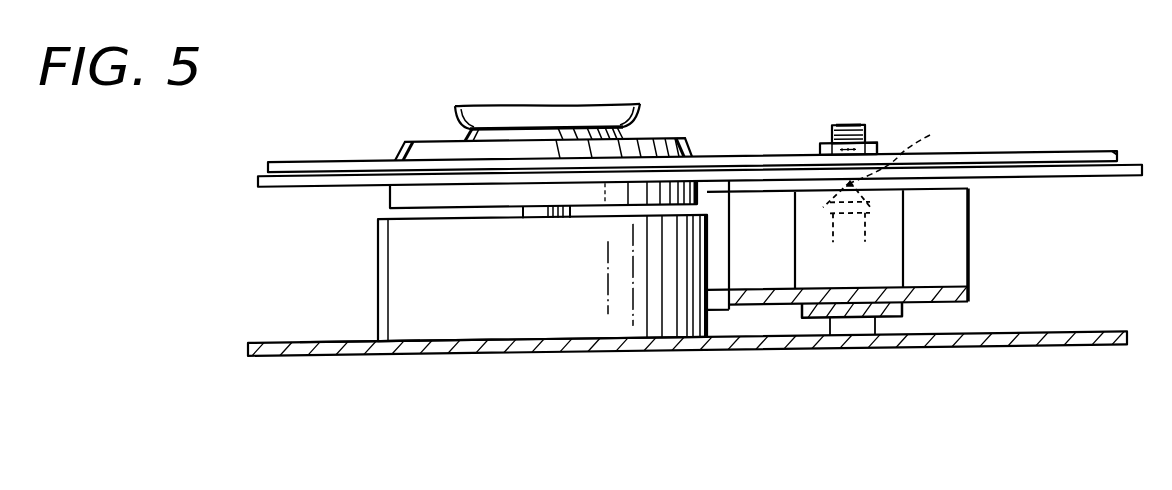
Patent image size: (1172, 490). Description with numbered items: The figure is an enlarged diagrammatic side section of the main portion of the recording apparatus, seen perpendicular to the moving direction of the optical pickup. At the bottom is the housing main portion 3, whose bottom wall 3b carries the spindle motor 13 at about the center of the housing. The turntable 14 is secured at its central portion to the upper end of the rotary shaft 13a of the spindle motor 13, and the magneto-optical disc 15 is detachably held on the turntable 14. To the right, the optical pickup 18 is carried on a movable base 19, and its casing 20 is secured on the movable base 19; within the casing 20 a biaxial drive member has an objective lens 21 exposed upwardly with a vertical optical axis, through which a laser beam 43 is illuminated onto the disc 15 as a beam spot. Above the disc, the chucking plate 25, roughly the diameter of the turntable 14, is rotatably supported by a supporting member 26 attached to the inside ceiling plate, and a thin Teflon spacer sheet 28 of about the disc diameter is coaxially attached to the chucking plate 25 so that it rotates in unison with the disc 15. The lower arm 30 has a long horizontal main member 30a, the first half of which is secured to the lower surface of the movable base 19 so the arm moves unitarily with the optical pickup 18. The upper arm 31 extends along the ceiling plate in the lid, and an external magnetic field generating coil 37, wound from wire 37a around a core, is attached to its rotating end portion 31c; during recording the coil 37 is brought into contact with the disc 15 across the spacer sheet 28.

The housing main portion 3 is at (262, 357).
The bottom wall 3b is at (337, 351).
The spindle motor 13 is at (376, 288).
The rotary shaft 13a is at (537, 214).
The turntable 14 is at (388, 200).
The magneto-optical disc 15 is at (253, 188).
The optical pickup 18 is at (970, 263).
The movable base 19 is at (970, 293).
The casing 20 is at (970, 225).
The objective lens 21 is at (827, 218).
The chucking plate 25 is at (415, 140).
The supporting member 26 is at (637, 110).
The spacer sheet 28 is at (272, 160).
The lower arm 30 is at (830, 348).
The main member 30a is at (875, 348).
The upper arm 31 is at (822, 150).
The rotating end portion 31c is at (880, 147).
The external magnetic field generating coil 37 is at (838, 126).
The screw head 37a is at (858, 126).
The laser beam 43 is at (930, 135).